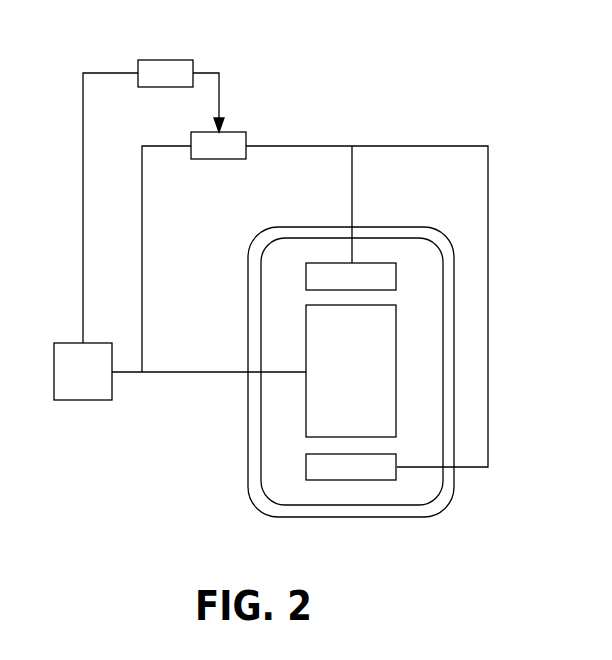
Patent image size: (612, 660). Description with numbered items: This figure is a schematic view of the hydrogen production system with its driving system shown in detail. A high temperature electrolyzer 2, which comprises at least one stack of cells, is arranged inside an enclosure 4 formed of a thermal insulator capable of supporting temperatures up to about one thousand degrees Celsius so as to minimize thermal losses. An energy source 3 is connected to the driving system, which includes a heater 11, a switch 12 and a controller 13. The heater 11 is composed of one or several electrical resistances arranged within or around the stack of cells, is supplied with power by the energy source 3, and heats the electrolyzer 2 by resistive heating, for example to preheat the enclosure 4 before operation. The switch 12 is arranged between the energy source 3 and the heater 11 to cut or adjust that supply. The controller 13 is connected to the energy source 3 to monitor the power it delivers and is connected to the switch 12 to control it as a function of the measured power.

The high temperature electrolyzer 2 is at (396, 332).
The energy source 3 is at (73, 400).
The enclosure 4 is at (402, 517).
The heater 11 is at (369, 262).
The switch 12 is at (233, 132).
The controller 13 is at (157, 58).